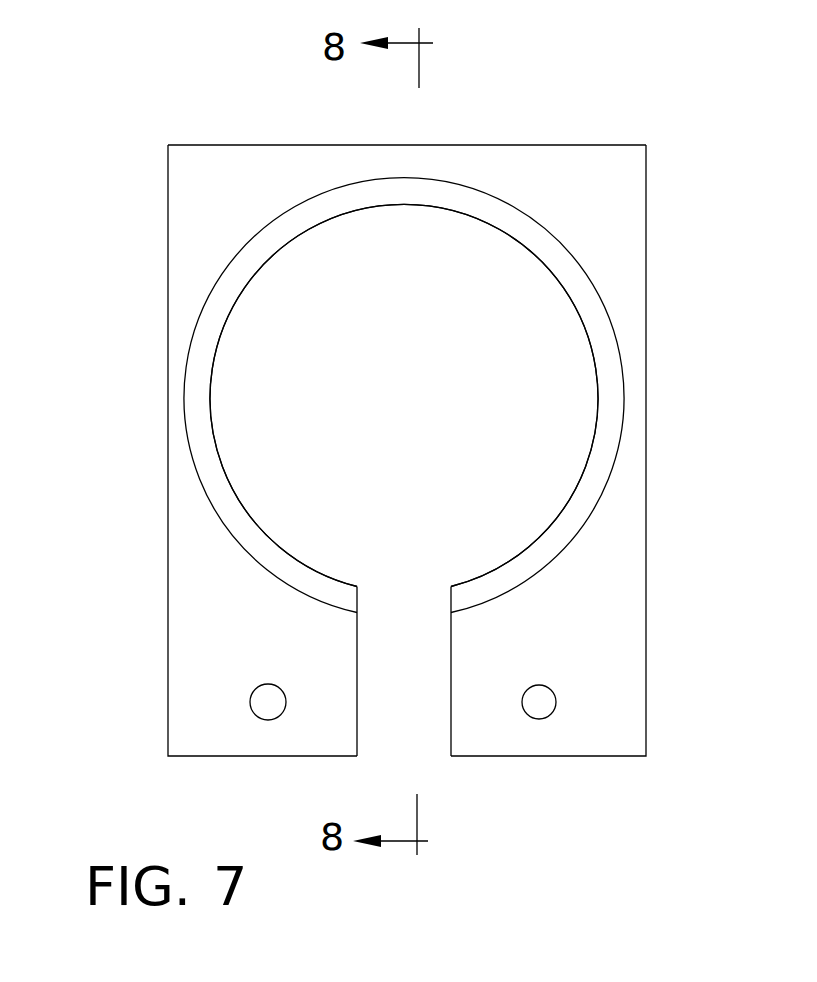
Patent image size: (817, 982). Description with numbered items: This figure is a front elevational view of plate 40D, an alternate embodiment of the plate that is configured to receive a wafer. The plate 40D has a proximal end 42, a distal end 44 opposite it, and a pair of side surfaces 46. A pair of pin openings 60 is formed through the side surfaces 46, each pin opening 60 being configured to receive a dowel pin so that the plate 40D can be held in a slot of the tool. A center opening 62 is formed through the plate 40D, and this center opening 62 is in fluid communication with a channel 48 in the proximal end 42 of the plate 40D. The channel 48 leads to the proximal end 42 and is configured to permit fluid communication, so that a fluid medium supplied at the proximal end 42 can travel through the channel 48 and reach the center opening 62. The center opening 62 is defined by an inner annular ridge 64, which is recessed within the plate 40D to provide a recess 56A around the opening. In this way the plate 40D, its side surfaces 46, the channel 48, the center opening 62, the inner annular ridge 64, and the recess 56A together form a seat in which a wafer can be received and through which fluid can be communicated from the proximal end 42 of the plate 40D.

The plate 40D is at (417, 443).
The proximal end 42 is at (580, 757).
The distal end 44 is at (197, 143).
The side surface 46 is at (269, 628).
The channel 48 is at (433, 778).
The recess 56A is at (193, 472).
The pin opening 60 is at (282, 713).
The center opening 62 is at (330, 385).
The inner annular ridge 64 is at (200, 423).